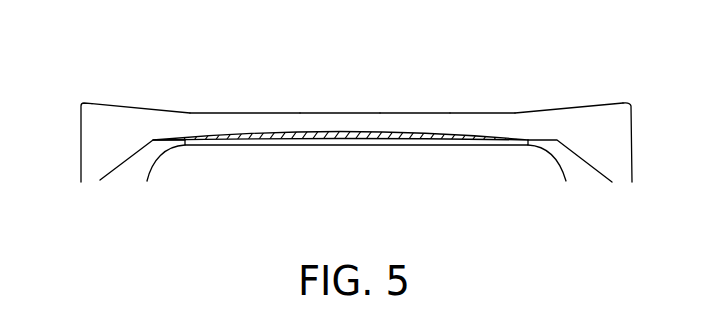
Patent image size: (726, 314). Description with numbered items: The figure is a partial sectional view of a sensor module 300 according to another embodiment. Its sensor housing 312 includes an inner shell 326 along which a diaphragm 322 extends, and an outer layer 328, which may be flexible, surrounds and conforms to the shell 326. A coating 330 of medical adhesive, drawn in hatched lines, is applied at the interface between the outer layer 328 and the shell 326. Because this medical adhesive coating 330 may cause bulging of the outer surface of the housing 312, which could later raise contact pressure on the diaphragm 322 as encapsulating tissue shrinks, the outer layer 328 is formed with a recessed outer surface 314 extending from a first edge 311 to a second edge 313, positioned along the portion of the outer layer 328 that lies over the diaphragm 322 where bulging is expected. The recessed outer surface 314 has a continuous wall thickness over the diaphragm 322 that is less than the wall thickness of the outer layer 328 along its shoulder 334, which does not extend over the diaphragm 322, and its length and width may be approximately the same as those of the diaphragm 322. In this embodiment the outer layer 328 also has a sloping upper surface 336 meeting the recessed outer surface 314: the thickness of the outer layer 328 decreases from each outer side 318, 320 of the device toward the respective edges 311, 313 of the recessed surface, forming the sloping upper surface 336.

The sensor module 300 is at (370, 81).
The first edge 311 is at (205, 113).
The sensor housing 312 is at (130, 52).
The second edge 313 is at (515, 112).
The recessed outer surface 314 is at (448, 112).
The outer side 318 is at (79, 148).
The outer side 320 is at (633, 120).
The diaphragm 322 is at (280, 147).
The inner shell 326 is at (130, 171).
The outer layer 328 is at (378, 123).
The coating of medical adhesive 330 is at (291, 128).
The shoulder 334 is at (620, 148).
The sloping upper surface 336 is at (578, 107).